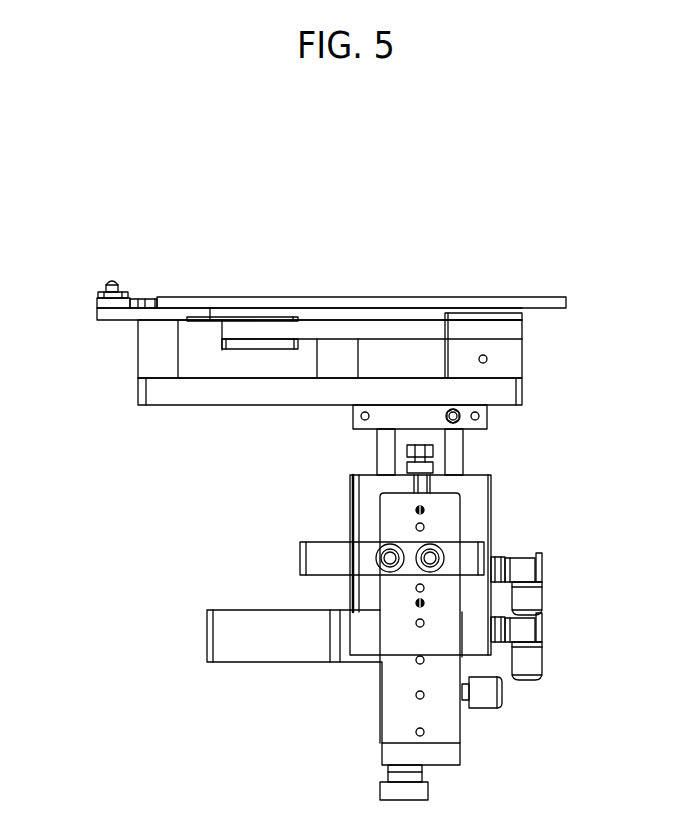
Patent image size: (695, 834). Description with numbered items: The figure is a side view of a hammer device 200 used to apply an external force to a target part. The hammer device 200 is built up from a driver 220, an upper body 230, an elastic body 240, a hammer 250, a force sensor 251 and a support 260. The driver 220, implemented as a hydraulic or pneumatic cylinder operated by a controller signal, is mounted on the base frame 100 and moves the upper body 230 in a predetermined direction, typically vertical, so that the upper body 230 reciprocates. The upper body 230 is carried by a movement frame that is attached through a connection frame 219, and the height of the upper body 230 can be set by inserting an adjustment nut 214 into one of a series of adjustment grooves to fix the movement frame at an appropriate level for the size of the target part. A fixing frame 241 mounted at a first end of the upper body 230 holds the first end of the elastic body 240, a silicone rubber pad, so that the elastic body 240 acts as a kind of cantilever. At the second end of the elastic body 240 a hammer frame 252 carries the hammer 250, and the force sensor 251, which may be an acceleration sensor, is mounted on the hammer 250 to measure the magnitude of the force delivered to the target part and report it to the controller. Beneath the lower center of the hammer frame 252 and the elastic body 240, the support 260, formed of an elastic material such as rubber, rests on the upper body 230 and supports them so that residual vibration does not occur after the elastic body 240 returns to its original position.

The base frame 100 is at (272, 662).
The hammer device 200 is at (506, 288).
The adjustment nut 214 is at (503, 697).
The connection frame 219 is at (443, 523).
The driver 220 is at (492, 492).
The upper body 230 is at (522, 392).
The elastic body 240 is at (402, 328).
The fixing frame 241 is at (508, 358).
The hammer 250 is at (104, 281).
The force sensor 251 is at (118, 290).
The hammer frame 252 is at (97, 301).
The support 260 is at (138, 353).